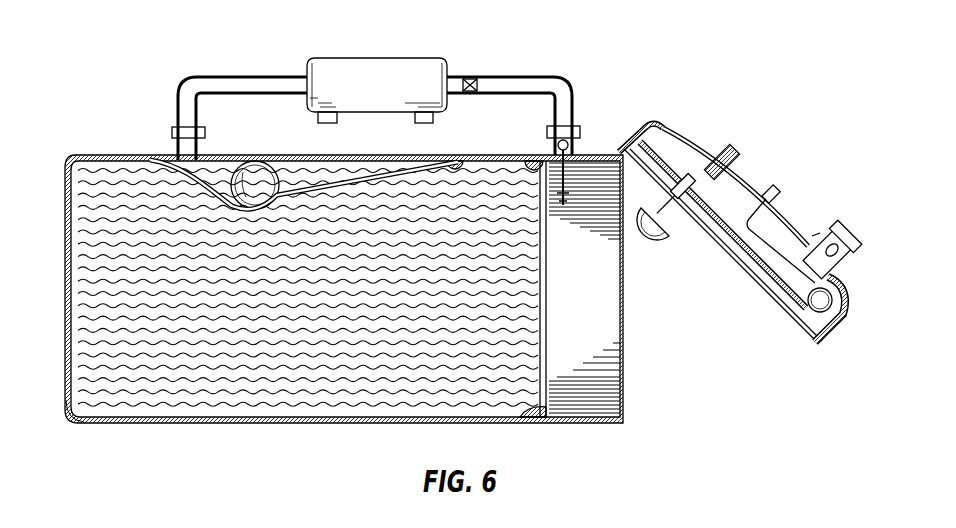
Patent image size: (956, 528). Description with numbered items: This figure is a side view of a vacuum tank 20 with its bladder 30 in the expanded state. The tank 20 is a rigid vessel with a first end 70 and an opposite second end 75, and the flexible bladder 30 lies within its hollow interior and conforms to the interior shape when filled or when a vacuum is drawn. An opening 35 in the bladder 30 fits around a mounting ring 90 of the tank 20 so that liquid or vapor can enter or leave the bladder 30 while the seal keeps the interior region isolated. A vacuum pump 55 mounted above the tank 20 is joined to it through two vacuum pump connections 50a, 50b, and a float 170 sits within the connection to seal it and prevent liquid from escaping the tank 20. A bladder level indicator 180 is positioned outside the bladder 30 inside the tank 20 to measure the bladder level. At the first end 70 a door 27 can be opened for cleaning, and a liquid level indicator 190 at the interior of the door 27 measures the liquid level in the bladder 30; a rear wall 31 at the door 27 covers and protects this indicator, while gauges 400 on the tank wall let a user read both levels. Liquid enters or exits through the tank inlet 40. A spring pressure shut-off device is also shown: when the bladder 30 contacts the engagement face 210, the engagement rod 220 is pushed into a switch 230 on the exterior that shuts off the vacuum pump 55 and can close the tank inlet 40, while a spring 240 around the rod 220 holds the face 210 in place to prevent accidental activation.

The vacuum tank 20 is at (150, 156).
The bladder 30 is at (163, 408).
The opening 35 is at (551, 273).
The vacuum pump connection 50a is at (205, 133).
The vacuum pump connection 50b is at (548, 131).
The vacuum pump 55 is at (380, 58).
The first end 70 is at (623, 377).
The second end 75 is at (76, 416).
The mounting ring 90 is at (546, 313).
The float 170 is at (566, 140).
The bladder level indicator 180 is at (352, 170).
The liquid level indicator 190 is at (804, 328).
The engagement face 210 is at (664, 247).
The engagement rod 220 is at (692, 176).
The switch 230 is at (733, 148).
The spring 240 is at (703, 216).
The door 27 is at (795, 222).
The rear wall 31 is at (781, 292).
The tank inlet 40 is at (836, 230).
The gauges 400 is at (775, 189).